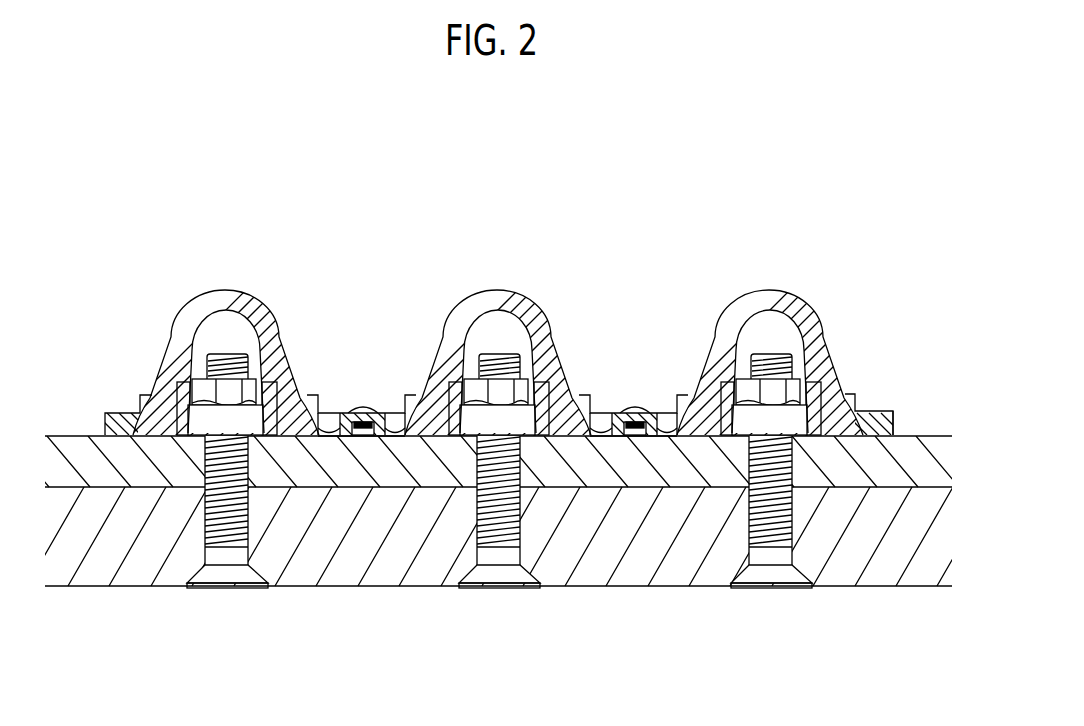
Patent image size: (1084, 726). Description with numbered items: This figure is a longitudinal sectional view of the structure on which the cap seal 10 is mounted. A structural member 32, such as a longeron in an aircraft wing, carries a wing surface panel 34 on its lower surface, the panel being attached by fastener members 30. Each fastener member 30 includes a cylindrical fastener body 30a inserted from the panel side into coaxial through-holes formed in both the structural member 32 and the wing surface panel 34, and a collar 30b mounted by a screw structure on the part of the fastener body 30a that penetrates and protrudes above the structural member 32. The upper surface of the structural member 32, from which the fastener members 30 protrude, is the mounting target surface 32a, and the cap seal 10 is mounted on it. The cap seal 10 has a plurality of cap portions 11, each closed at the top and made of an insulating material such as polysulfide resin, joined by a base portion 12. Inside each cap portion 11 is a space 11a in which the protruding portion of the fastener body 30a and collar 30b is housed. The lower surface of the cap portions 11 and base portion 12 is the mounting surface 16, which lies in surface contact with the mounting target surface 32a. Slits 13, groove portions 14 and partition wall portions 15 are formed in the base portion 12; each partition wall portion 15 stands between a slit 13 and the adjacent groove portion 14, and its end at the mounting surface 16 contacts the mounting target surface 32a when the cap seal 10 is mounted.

The cap seal 10 is at (703, 177).
The cap portion 11 is at (286, 336).
The space 11a is at (216, 327).
The base portion 12 is at (877, 411).
The slit 13 is at (329, 424).
The groove portion 14 is at (362, 421).
The partition wall portion 15 is at (347, 437).
The mounting surface 16 is at (850, 436).
The fastener member 30 is at (254, 607).
The fastener body 30a is at (198, 590).
The collar 30b is at (192, 382).
The structural member 32 is at (73, 435).
The mounting target surface 32a is at (945, 435).
The wing surface panel 34 is at (80, 588).